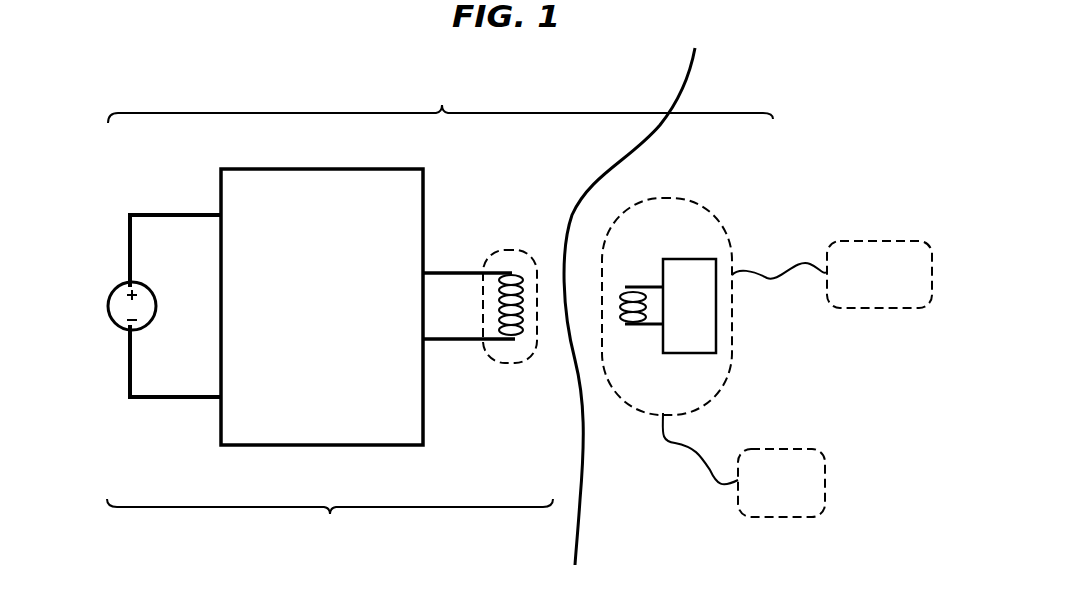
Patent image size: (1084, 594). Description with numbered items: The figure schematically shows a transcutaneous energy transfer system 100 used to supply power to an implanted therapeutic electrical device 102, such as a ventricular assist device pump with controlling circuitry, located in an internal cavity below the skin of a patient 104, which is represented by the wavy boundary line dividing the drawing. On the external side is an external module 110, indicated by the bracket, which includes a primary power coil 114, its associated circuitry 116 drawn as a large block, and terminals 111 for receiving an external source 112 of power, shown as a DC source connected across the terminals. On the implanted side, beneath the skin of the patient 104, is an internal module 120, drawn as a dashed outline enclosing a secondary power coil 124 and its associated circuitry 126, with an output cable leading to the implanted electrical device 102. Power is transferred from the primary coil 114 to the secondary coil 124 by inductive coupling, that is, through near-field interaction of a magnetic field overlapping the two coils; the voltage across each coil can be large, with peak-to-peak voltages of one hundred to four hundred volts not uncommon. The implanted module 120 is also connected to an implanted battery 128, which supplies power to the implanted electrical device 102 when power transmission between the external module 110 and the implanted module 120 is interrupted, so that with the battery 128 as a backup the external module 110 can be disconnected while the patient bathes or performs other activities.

The transcutaneous energy transfer (TET) system 100 is at (440, 102).
The implanted therapeutic electrical device 102 is at (787, 449).
The patient 104 is at (708, 98).
The external module 110 is at (330, 520).
The terminals 111 is at (132, 282).
The external source of power 112 is at (120, 330).
The primary power coil 114 is at (520, 340).
The associated circuitry 116 is at (380, 169).
The internal module 120 is at (705, 213).
The secondary power coil 124 is at (630, 285).
The associated circuitry 126 is at (683, 353).
The implanted battery 128 is at (893, 241).